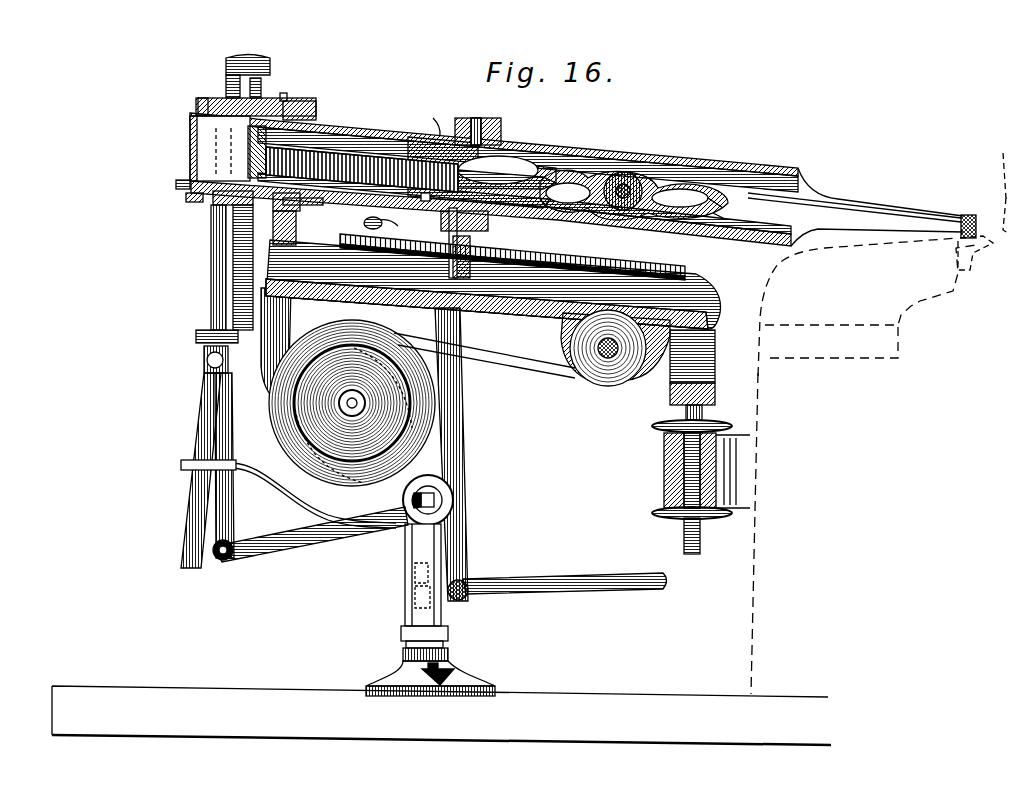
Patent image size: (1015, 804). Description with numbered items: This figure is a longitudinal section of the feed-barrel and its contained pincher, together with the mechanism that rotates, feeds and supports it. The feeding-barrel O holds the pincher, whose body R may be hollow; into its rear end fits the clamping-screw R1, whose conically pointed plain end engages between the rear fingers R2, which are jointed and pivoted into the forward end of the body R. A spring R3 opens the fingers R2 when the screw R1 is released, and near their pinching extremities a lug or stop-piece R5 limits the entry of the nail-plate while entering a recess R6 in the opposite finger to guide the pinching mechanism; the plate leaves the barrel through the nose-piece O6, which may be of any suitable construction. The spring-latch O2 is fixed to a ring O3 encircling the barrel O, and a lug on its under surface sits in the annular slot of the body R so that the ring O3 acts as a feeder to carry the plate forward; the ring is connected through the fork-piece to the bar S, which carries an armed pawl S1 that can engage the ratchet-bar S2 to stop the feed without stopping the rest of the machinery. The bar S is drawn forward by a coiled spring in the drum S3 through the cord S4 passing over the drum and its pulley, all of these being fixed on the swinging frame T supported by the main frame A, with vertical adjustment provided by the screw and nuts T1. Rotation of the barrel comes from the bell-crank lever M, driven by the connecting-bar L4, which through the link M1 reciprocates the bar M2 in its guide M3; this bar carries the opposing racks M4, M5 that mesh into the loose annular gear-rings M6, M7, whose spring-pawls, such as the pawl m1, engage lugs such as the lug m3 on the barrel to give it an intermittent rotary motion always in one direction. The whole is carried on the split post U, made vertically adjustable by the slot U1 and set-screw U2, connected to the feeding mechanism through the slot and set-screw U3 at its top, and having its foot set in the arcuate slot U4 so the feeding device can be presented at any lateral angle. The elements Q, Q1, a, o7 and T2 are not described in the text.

The main frame A is at (800, 490).
The casing Q is at (494, 179).
The casing tube Q1 is at (686, 168).
The body R is at (340, 134).
The clamping-screw R1 is at (507, 179).
The pincher fingers R2 is at (625, 168).
The spring R3 is at (667, 196).
The lug or stop-piece R5 is at (731, 195).
The recess R6 is at (728, 217).
The feeding-barrel O is at (251, 139).
The pawl m1 is at (195, 90).
The annular gear-ring M6 is at (216, 82).
The lug m3 is at (298, 99).
The spring-latch O2 is at (432, 114).
The ring O3 is at (478, 118).
The nose-piece O6 is at (970, 209).
The stud a is at (183, 177).
The annular gear-ring M7 is at (262, 215).
The rack M4 is at (203, 246).
The rack M5 is at (240, 280).
The bar M2 is at (176, 526).
The bar S is at (330, 256).
The swinging frame T is at (410, 224).
The armed pawl S1 is at (381, 215).
The pin o7 is at (462, 230).
The ratchet-bar S2 is at (596, 256).
The spring-drum S3 is at (352, 403).
The cord S4 is at (540, 356).
The bracket T2 is at (734, 322).
The screw and nuts T1 is at (656, 432).
The slot and set-screw U3 is at (410, 486).
The post U is at (423, 575).
The slot U1 is at (406, 566).
The set-screw U2 is at (406, 589).
The slot U4 is at (446, 652).
The connecting-bar L4 is at (556, 586).
The bell-crank lever M is at (349, 534).
The link M1 is at (258, 490).
The guide M3 is at (250, 454).